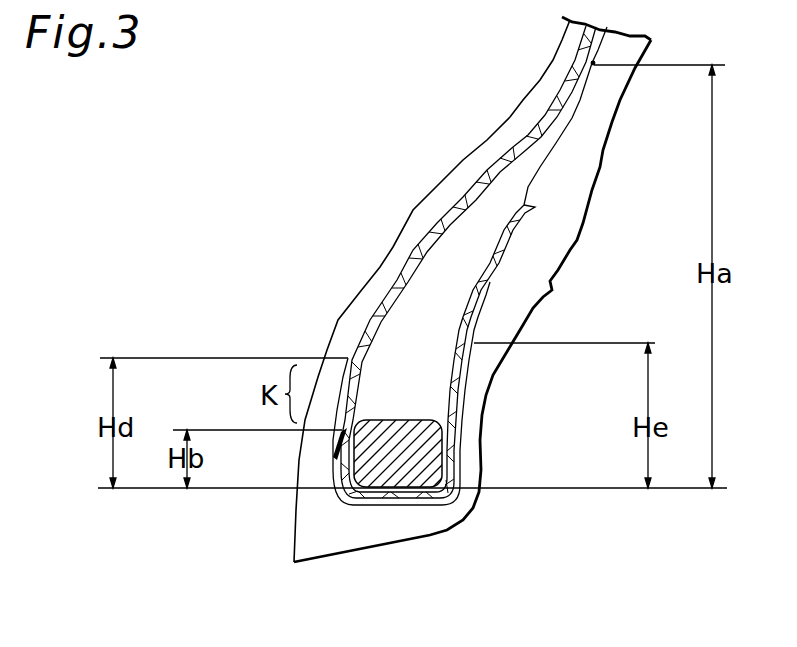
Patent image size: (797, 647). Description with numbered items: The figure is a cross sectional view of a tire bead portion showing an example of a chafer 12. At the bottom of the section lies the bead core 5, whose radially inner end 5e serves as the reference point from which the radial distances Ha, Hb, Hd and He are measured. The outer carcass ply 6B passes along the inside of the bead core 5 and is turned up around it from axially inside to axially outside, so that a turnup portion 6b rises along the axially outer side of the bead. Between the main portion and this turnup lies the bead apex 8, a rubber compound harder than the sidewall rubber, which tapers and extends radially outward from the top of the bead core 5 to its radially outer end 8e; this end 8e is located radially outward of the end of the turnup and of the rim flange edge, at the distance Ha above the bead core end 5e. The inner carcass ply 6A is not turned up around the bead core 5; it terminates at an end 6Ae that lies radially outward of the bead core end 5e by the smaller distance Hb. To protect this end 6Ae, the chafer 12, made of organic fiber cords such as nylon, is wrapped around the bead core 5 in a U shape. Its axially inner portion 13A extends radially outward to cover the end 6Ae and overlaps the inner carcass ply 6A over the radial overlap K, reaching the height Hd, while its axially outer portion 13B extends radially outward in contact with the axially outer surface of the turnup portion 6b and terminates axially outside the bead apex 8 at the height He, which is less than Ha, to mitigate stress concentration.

The bead core 5 is at (408, 466).
The radially inner end of the bead core 5e is at (497, 490).
The inner carcass ply 6A is at (517, 147).
The end of the inner carcass ply 6Ae is at (335, 456).
The outer carcass ply 6B is at (518, 230).
The turnup portion of the outer carcass ply 6b is at (492, 280).
The bead apex 8 is at (447, 257).
The radially outer end of the bead apex 8e is at (597, 61).
The chafer 12 is at (460, 445).
The axially inner portion of the chafer 13A is at (339, 388).
The axially outer portion of the chafer 13B is at (474, 368).